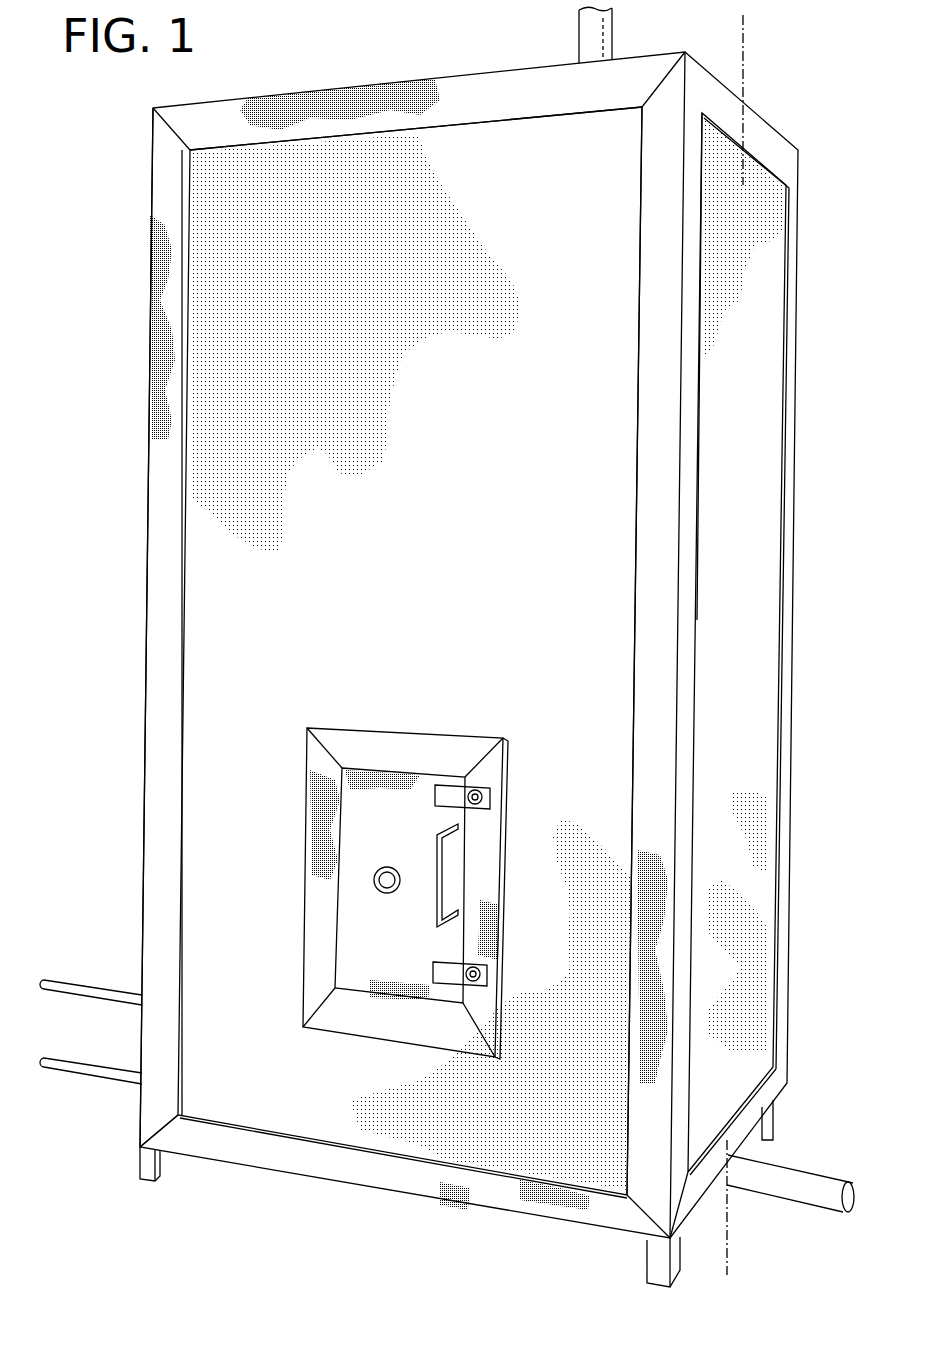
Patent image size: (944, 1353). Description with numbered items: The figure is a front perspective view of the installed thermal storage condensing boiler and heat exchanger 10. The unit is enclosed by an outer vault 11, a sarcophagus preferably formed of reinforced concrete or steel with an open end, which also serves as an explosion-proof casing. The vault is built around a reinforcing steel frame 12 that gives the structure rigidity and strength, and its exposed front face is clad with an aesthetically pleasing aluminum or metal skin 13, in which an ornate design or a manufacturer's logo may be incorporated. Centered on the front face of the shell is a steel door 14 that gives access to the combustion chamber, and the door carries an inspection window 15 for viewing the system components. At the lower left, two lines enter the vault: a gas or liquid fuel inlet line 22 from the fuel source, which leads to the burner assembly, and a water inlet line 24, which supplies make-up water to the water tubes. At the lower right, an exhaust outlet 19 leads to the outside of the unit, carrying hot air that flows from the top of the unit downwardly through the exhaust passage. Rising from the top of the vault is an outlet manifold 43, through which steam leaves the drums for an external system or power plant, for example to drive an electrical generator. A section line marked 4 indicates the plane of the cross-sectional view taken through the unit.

The condensing boiler and heat exchanger 10 is at (414, 669).
The outer vault 11 is at (758, 465).
The reinforcing steel frame 12 is at (148, 1105).
The metal skin 13 is at (503, 521).
The steel door 14 is at (385, 797).
The inspection window 15 is at (373, 878).
The exhaust outlet 19 is at (807, 1180).
The fuel inlet line 22 is at (77, 985).
The water inlet line 24 is at (66, 1060).
The outlet manifold 43 is at (586, 33).
The section line 4- 4 is at (725, 32).